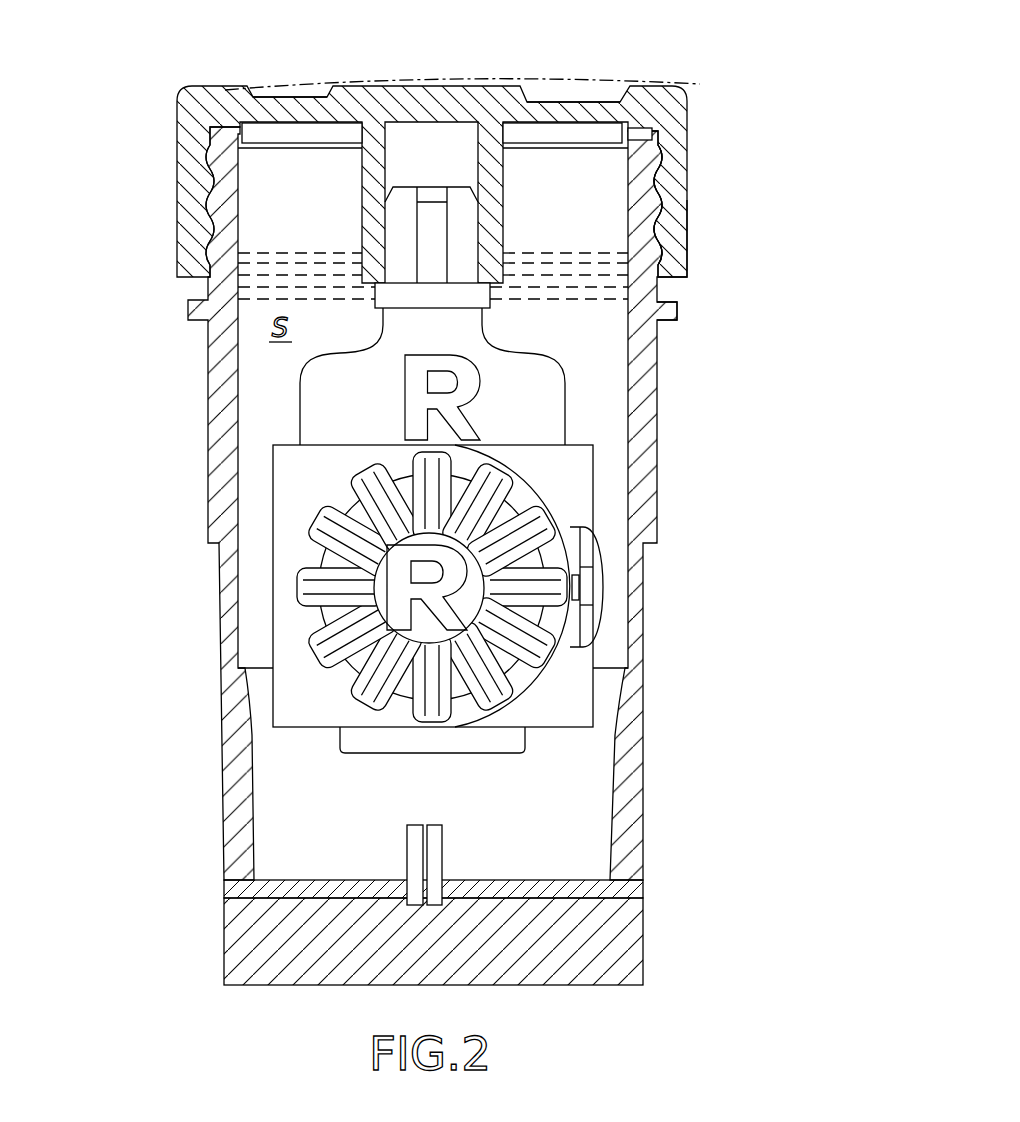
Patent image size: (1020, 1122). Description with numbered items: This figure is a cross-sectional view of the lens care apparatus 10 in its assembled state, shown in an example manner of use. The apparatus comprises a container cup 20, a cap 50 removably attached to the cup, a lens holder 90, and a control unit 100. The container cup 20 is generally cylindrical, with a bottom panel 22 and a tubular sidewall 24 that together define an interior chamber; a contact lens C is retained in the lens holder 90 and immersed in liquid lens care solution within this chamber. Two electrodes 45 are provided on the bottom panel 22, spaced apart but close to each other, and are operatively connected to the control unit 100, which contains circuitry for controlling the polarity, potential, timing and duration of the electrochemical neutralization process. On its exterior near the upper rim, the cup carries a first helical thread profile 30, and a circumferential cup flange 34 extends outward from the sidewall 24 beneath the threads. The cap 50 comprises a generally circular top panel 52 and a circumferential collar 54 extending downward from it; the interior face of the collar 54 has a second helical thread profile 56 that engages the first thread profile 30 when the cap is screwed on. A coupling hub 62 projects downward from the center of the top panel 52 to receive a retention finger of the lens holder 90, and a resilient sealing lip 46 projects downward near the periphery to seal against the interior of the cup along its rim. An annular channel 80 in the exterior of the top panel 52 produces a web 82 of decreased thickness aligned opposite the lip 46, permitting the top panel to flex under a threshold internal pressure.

The lens care apparatus 10 is at (755, 78).
The container cup 20 is at (431, 556).
The bottom panel 22 is at (580, 897).
The tubular sidewall 24 is at (640, 735).
The first helical thread profile 30 is at (672, 185).
The circumferential cup flange 34 is at (678, 306).
The electrodes 45 is at (407, 825).
The cap sealing lip 46 is at (553, 135).
The cap 50 is at (413, 142).
The top panel 52 is at (503, 93).
The collar 54 is at (690, 243).
The second helical thread profile 56 is at (628, 205).
The coupling hub 62 is at (362, 196).
The annular channel 80 is at (592, 98).
The web of decreased material thickness 82 is at (306, 118).
The lens holder 90 is at (433, 622).
The control unit 100 is at (326, 933).
The contact lens C is at (503, 513).